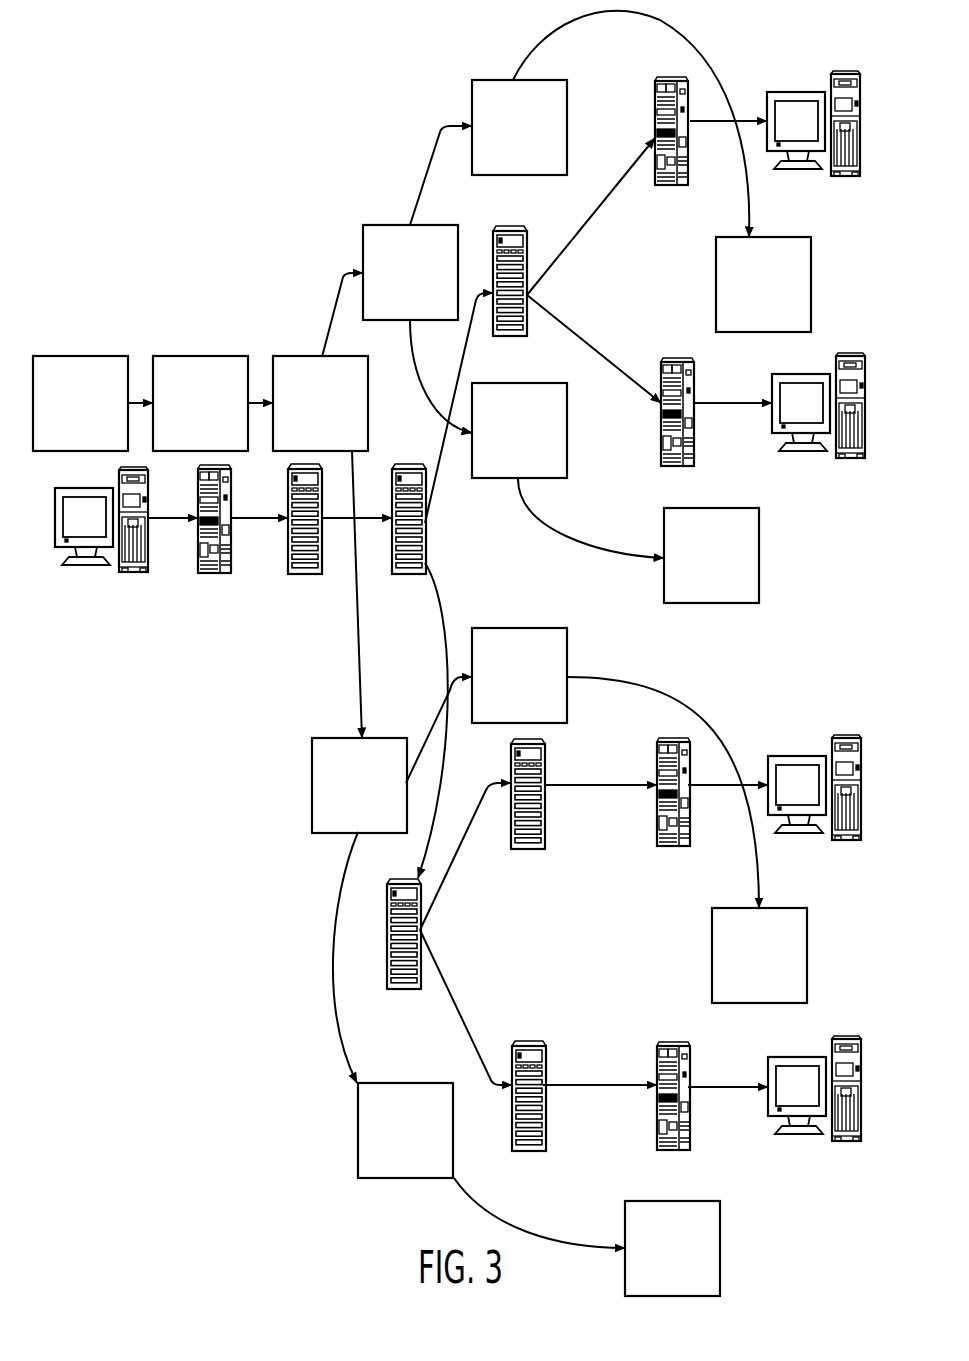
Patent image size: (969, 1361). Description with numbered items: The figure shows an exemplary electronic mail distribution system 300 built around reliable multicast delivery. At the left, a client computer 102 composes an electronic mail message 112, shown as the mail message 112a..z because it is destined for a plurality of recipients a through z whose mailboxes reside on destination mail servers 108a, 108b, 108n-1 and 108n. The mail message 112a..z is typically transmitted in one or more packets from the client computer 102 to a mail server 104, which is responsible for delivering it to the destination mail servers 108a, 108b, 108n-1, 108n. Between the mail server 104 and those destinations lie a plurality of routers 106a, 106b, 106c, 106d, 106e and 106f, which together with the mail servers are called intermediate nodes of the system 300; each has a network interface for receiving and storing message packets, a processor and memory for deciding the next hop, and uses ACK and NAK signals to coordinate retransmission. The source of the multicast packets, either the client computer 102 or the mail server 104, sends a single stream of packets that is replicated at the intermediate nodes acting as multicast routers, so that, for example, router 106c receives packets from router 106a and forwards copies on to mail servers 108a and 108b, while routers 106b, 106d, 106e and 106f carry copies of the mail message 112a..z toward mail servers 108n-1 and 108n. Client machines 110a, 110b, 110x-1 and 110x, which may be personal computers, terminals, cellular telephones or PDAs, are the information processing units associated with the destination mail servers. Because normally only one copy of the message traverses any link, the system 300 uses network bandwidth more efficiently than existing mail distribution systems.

The electronic mail distribution system 300 is at (260, 180).
The client computer 102 is at (148, 560).
The mail server 104 is at (198, 556).
The router 106a is at (322, 558).
The router 106b is at (392, 552).
The router 106c is at (527, 315).
The router 106d is at (387, 966).
The router 106e is at (544, 822).
The router 106f is at (543, 1128).
The destination mail server 108a is at (690, 162).
The destination mail server 108b is at (693, 442).
The destination mail server 108n-1 is at (723, 870).
The destination mail server 108n is at (688, 1128).
The client machine 110a is at (860, 157).
The client machine 110b is at (867, 437).
The client machine 110x-1 is at (862, 816).
The client machine 110x is at (862, 1123).
The electronic mail message 112 is at (422, 688).
The electronic mail message 112a..z is at (422, 688).